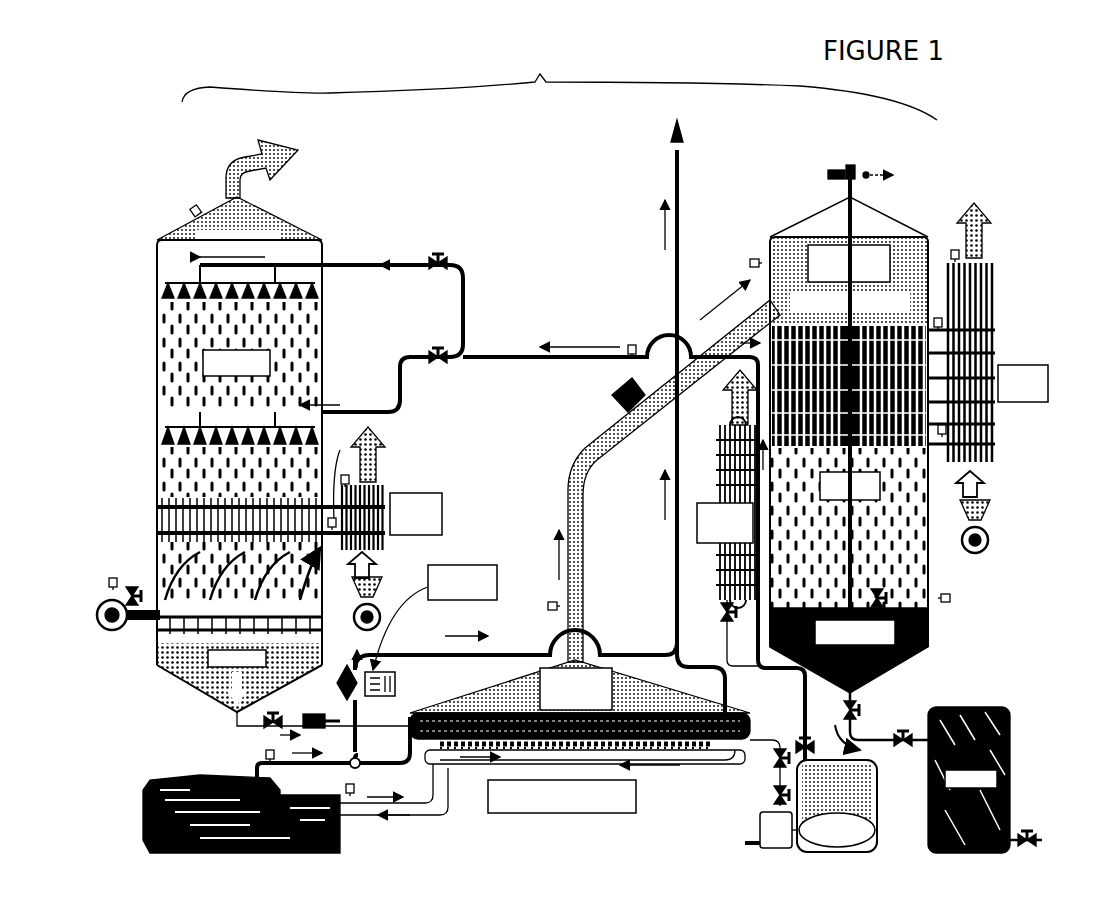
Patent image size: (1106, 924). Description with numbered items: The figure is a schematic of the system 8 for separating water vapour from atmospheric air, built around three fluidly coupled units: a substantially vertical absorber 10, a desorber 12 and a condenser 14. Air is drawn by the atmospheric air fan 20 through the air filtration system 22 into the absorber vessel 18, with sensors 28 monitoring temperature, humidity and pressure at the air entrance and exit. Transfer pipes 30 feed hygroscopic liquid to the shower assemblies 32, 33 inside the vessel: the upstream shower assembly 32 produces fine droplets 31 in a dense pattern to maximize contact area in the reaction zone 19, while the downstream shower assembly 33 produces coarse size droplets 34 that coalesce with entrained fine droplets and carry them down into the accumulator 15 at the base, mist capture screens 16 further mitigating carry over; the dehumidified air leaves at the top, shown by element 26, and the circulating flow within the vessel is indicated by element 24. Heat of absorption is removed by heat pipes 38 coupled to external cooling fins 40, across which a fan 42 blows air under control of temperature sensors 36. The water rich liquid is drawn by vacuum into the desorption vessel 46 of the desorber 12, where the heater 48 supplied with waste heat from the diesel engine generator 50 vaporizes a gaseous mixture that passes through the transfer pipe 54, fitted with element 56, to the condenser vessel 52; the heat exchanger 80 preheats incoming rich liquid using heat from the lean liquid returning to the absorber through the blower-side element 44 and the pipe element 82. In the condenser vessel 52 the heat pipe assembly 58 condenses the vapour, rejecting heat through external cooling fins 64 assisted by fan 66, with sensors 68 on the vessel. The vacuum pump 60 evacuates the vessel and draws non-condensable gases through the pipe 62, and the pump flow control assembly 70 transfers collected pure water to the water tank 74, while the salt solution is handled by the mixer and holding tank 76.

The system 8 is at (559, 86).
The absorber 10 is at (332, 222).
The desorber 12 is at (712, 772).
The condenser 14 is at (760, 218).
The accumulator 15 is at (185, 685).
The mist capture screens 16 is at (880, 590).
The absorber vessel 18 is at (157, 255).
The reaction zone 19 is at (200, 326).
The atmospheric air fan 20 is at (95, 655).
The air filtration system 22 is at (130, 580).
The air flow arrows 24 is at (160, 640).
The dehumidified air outlet 26 is at (245, 160).
The sensors 28 is at (195, 200).
The transfer pipes 30 is at (368, 265).
The fine droplets 31 is at (160, 465).
The shower assembly 32 is at (160, 440).
The shower assembly 33 is at (325, 290).
The coarse size droplets 34 is at (160, 386).
The temperature sensors 36 is at (338, 478).
The heat pipes 38 is at (160, 500).
The cooling fins 40 is at (385, 492).
The fan 42 is at (385, 545).
The blower / steam generator 44 is at (378, 600).
The desorption vessel 46 is at (425, 712).
The heater 48 is at (650, 755).
The gaseous mixture 50 is at (325, 855).
The condenser vessel 52 is at (905, 215).
The transfer pipe 54 is at (570, 432).
The vapour pipe valve 56 is at (612, 388).
The heat pipe assembly 58 is at (712, 420).
The vacuum pump 60 is at (928, 612).
The pipe 62 is at (850, 555).
The external cooling fins 64 is at (998, 320).
The fan 66 is at (990, 520).
The sensor 68 is at (953, 250).
The pump flow control assembly 70 is at (862, 712).
The water tank 74 is at (998, 707).
The LiCl mixer and holding tank 76 is at (790, 762).
The heat exchanger 80 is at (721, 489).
The desorber outlet pipe 82 is at (756, 730).